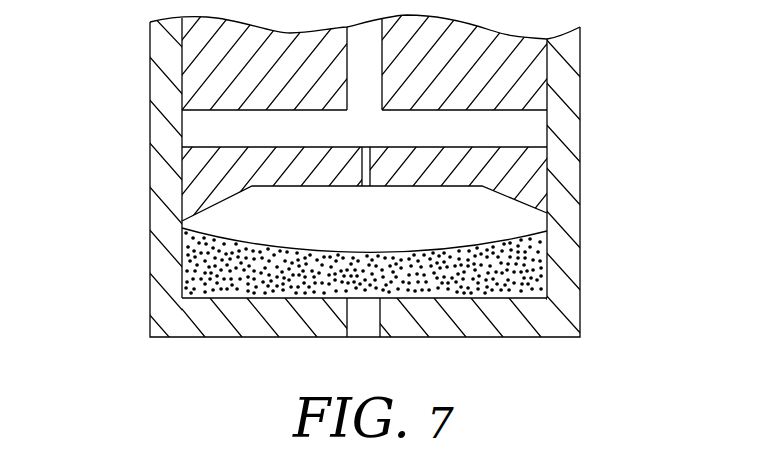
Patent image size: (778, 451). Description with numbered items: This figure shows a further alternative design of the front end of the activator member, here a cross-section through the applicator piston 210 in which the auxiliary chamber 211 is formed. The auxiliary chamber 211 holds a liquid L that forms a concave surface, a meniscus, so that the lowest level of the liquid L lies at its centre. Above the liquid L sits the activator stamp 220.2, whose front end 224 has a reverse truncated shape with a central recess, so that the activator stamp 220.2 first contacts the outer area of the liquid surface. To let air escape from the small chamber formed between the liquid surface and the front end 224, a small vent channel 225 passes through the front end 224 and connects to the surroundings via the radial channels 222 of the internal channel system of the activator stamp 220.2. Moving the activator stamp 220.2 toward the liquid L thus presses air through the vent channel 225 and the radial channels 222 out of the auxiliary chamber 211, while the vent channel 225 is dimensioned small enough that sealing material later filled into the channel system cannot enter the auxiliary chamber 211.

The applicator piston 210 is at (567, 247).
The auxiliary chamber 211 is at (498, 221).
The activator stamp 220.2 is at (537, 68).
The radial channels 222 is at (537, 121).
The activator stamp front end 224 is at (528, 166).
The vent channel 225 is at (362, 165).
The liquid L is at (538, 287).